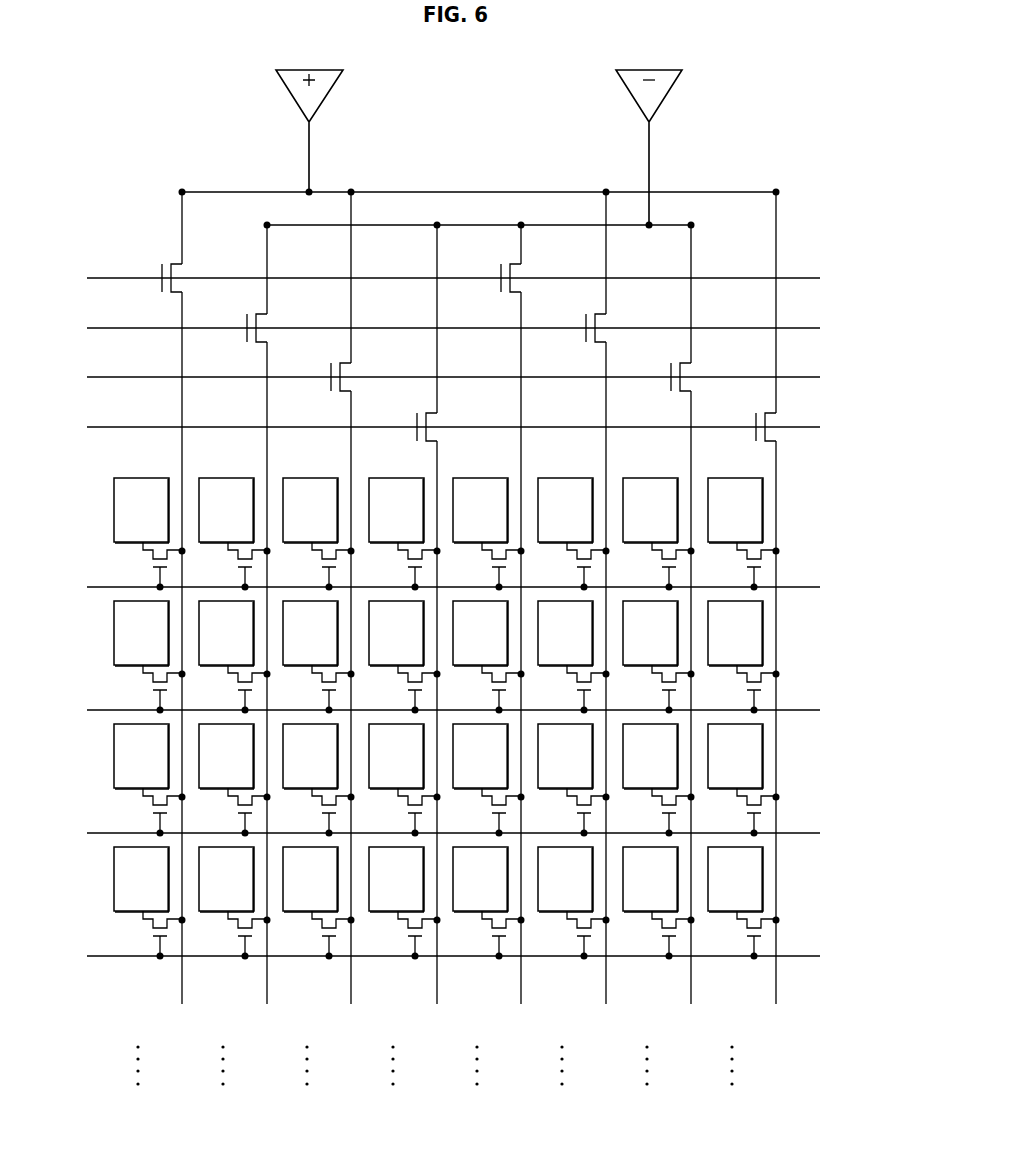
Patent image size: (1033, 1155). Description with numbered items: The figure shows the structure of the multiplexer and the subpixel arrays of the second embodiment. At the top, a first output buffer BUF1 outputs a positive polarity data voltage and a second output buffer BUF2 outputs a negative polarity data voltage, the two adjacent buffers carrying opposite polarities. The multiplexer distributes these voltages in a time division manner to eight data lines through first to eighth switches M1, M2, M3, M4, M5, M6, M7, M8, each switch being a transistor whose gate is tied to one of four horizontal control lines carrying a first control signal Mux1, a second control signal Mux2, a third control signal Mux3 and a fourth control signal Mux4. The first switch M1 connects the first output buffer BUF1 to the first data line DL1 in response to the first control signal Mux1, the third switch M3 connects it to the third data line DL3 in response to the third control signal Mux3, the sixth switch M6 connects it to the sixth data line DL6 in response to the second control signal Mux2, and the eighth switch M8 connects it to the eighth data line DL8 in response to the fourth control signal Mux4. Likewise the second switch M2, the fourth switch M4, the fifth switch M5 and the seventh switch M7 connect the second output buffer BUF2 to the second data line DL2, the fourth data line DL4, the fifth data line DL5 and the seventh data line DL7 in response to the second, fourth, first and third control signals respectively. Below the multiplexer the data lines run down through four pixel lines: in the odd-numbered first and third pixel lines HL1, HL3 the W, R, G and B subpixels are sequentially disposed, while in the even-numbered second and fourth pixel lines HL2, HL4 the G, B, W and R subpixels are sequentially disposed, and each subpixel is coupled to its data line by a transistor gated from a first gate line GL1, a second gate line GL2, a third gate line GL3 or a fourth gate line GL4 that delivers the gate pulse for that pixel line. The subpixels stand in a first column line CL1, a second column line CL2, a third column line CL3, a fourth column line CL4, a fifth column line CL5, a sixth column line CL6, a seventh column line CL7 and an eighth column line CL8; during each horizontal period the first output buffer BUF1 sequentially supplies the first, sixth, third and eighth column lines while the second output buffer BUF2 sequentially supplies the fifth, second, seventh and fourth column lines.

The first output buffer BUF1 is at (320, 93).
The second output buffer BUF2 is at (658, 93).
The first switch M1 is at (188, 270).
The second switch M2 is at (273, 320).
The third switch M3 is at (357, 369).
The fourth switch M4 is at (443, 419).
The fifth switch M5 is at (527, 270).
The sixth switch M6 is at (612, 320).
The seventh switch M7 is at (697, 369).
The eighth switch M8 is at (782, 419).
The first control signal Mux1 is at (426, 277).
The second control signal Mux2 is at (426, 327).
The third control signal Mux3 is at (426, 376).
The fourth control signal Mux4 is at (426, 426).
The first gate line GL1 is at (431, 586).
The second gate line GL2 is at (431, 686).
The third gate line GL3 is at (431, 830).
The fourth gate line GL4 is at (431, 952).
The first pixel line HL1 is at (502, 534).
The second pixel line HL2 is at (502, 657).
The third pixel line HL3 is at (502, 780).
The fourth pixel line HL4 is at (502, 903).
The first data line DL1 is at (181, 614).
The second data line DL2 is at (266, 631).
The third data line DL3 is at (350, 614).
The fourth data line DL4 is at (436, 631).
The fifth data line DL5 is at (520, 631).
The sixth data line DL6 is at (605, 614).
The seventh data line DL7 is at (690, 631).
The eighth data line DL8 is at (775, 614).
The first column line CL1 is at (138, 1083).
The second column line CL2 is at (223, 1083).
The third column line CL3 is at (307, 1083).
The fourth column line CL4 is at (393, 1083).
The fifth column line CL5 is at (477, 1083).
The sixth column line CL6 is at (562, 1083).
The seventh column line CL7 is at (647, 1083).
The eighth column line CL8 is at (732, 1083).